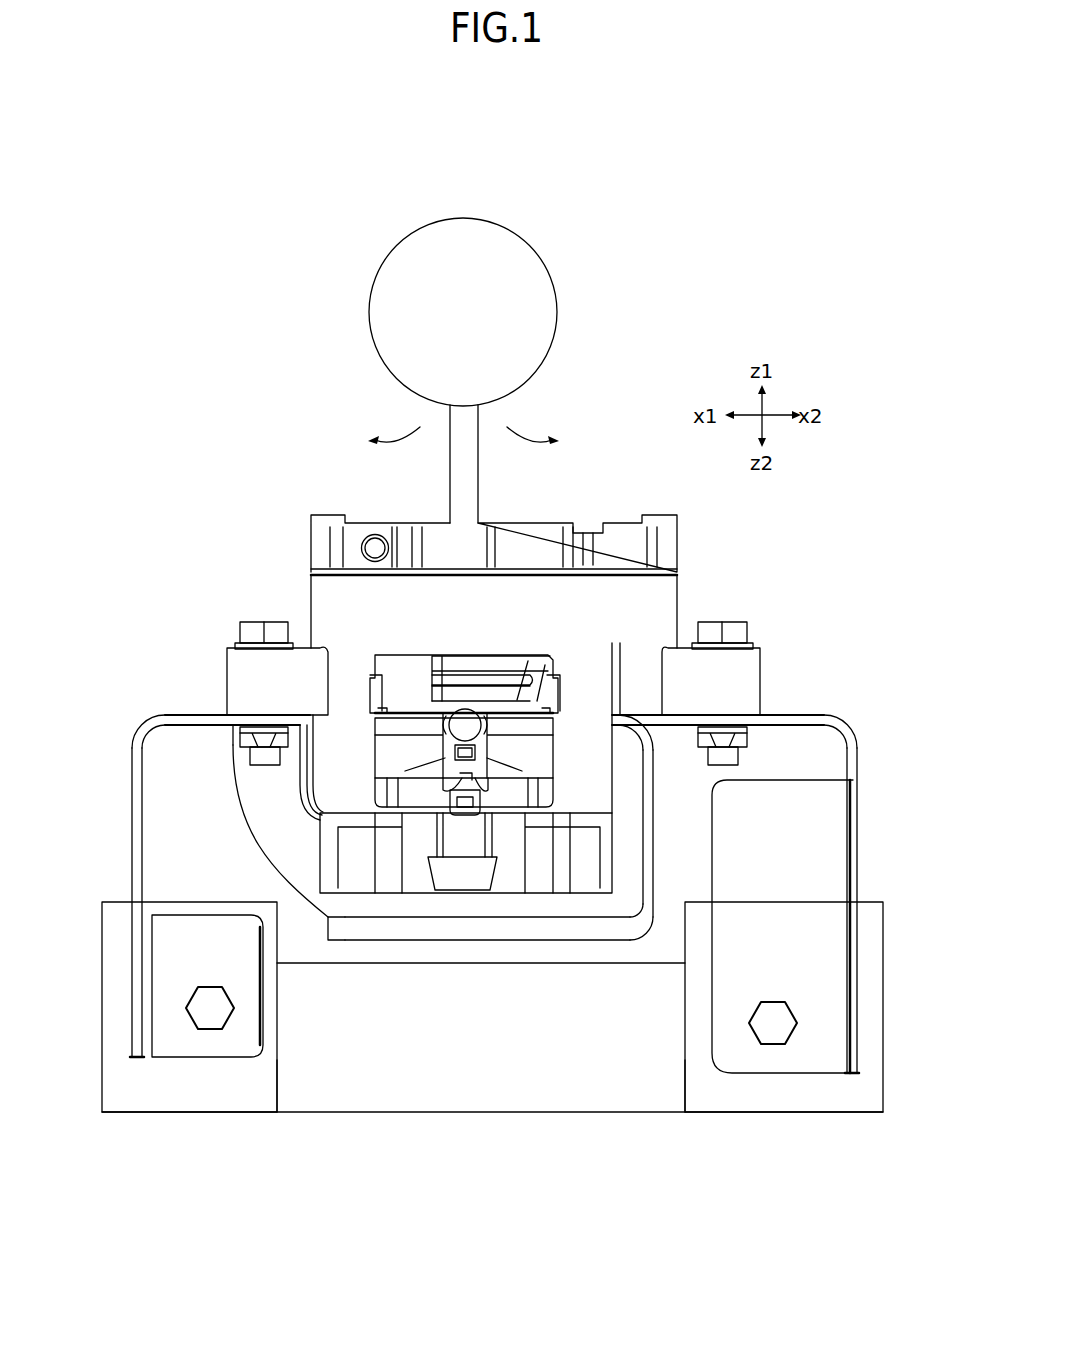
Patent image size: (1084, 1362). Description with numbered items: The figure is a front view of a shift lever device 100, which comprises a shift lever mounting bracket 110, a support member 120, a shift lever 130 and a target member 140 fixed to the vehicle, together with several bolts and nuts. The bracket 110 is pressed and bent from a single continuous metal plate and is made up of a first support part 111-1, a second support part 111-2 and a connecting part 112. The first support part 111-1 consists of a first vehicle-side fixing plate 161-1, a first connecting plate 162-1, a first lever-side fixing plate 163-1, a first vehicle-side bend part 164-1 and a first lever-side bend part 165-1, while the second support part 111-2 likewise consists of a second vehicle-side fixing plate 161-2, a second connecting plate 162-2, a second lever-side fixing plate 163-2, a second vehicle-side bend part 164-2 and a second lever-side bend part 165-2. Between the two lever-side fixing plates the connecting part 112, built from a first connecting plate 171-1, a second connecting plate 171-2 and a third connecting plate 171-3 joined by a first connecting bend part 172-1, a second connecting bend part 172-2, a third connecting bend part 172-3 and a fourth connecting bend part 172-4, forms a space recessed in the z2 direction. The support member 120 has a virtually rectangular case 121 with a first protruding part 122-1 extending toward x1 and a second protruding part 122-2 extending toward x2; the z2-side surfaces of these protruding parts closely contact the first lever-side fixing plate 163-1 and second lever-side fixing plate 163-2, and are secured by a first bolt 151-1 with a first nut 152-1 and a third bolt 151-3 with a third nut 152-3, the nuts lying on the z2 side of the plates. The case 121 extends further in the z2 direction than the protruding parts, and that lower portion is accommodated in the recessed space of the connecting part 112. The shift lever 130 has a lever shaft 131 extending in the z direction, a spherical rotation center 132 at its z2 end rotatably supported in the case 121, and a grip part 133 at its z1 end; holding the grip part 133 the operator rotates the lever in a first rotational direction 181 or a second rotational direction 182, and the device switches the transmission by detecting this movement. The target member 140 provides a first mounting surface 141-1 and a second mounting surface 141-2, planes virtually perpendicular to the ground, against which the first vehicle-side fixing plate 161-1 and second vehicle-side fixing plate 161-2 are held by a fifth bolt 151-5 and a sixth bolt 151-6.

The shift lever device 100 is at (304, 197).
The shift lever mounting bracket 110 is at (665, 1228).
The first support part 111-1 is at (250, 1033).
The second support part 111-2 is at (735, 1050).
The connecting part 112 is at (418, 933).
The support member 120 is at (322, 522).
The case 121 is at (325, 603).
The first protruding part 122-1 is at (242, 672).
The second protruding part 122-2 is at (750, 685).
The shift lever 130 is at (392, 295).
The lever shaft 131 is at (466, 498).
The rotation center 132 is at (443, 800).
The grip part 133 is at (528, 308).
The target member 140 is at (862, 1093).
The first mounting surface 141-1 is at (252, 1093).
The second mounting surface 141-2 is at (718, 1095).
The first bolt 151-1 is at (258, 622).
The third bolt 151-3 is at (733, 622).
The fifth bolt 151-5 is at (212, 1017).
The sixth bolt 151-6 is at (773, 1035).
The first nut 152-1 is at (265, 748).
The third nut 152-3 is at (745, 750).
The first vehicle-side fixing plate 161-1 is at (175, 940).
The second vehicle-side fixing plate 161-2 is at (805, 968).
The first connecting plate 162-1 is at (133, 832).
The second connecting plate 162-2 is at (852, 858).
The first lever-side fixing plate 163-1 is at (205, 715).
The second lever-side fixing plate 163-2 is at (803, 712).
The first vehicle-side bend part 164-1 is at (165, 1050).
The second vehicle-side bend part 164-2 is at (822, 1057).
The first lever-side bend part 165-1 is at (148, 735).
The second lever-side bend part 165-2 is at (845, 732).
The first connecting plate 171-1 is at (273, 837).
The second connecting plate 171-2 is at (470, 935).
The third connecting plate 171-3 is at (648, 813).
The first connecting bend part 172-1 is at (230, 728).
The second connecting bend part 172-2 is at (358, 920).
The third connecting bend part 172-3 is at (643, 928).
The fourth connecting bend part 172-4 is at (660, 727).
The first rotational direction 181 is at (397, 430).
The second rotational direction 182 is at (535, 430).